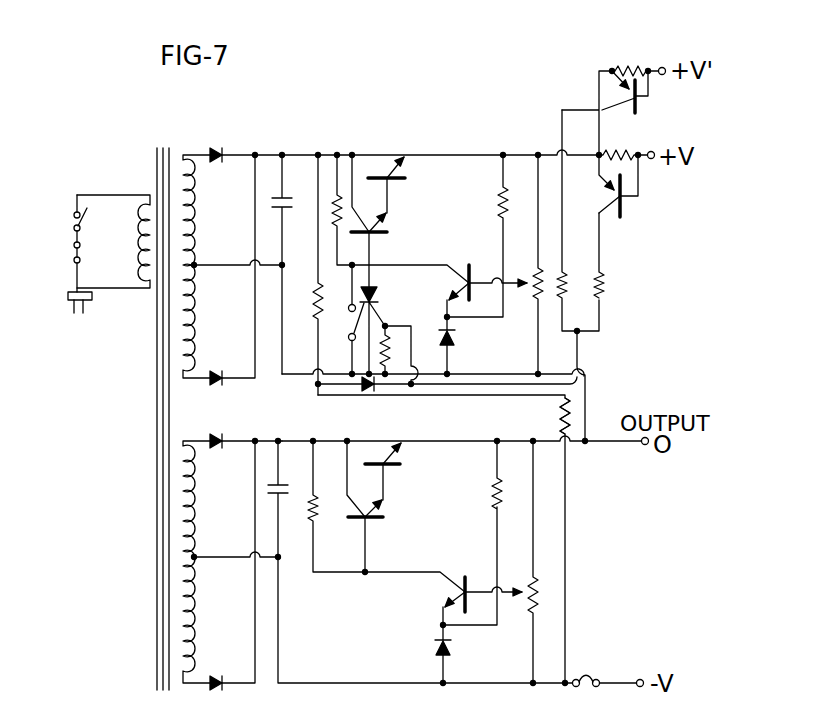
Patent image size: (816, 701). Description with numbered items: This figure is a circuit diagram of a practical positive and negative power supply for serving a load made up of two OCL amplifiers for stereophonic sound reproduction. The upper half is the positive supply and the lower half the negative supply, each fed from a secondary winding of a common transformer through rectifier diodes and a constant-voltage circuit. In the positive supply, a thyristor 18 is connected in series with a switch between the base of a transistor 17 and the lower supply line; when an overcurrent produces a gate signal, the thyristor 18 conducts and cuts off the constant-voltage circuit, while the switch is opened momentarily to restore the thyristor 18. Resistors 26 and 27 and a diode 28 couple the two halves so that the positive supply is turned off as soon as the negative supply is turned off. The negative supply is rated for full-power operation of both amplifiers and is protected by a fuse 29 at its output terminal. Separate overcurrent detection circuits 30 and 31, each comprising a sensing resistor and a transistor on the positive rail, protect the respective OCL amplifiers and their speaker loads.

The transistor 17 is at (388, 246).
The thyristor 18 is at (387, 328).
The resistor 26 is at (303, 275).
The resistor 27 is at (546, 416).
The diode 28 is at (366, 388).
The fuse 29 is at (584, 671).
The overcurrent detection circuit 30 is at (618, 143).
The overcurrent detection circuit 31 is at (629, 57).